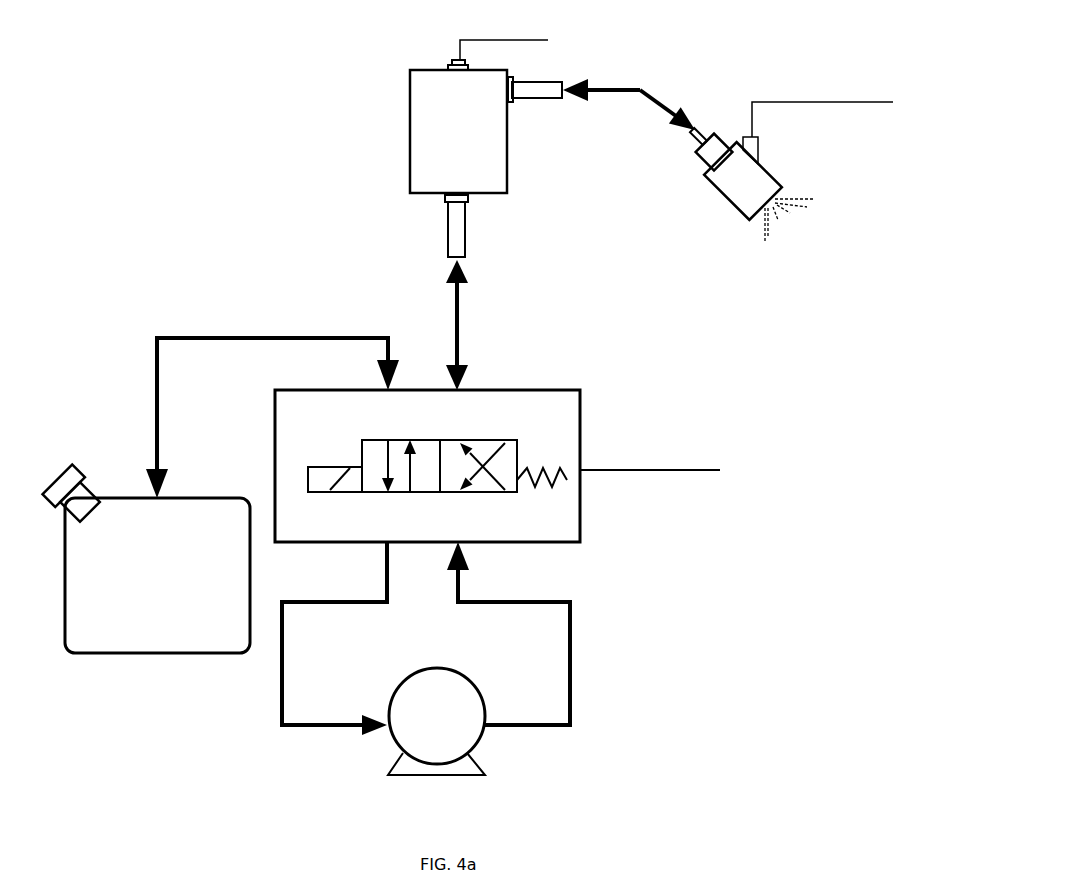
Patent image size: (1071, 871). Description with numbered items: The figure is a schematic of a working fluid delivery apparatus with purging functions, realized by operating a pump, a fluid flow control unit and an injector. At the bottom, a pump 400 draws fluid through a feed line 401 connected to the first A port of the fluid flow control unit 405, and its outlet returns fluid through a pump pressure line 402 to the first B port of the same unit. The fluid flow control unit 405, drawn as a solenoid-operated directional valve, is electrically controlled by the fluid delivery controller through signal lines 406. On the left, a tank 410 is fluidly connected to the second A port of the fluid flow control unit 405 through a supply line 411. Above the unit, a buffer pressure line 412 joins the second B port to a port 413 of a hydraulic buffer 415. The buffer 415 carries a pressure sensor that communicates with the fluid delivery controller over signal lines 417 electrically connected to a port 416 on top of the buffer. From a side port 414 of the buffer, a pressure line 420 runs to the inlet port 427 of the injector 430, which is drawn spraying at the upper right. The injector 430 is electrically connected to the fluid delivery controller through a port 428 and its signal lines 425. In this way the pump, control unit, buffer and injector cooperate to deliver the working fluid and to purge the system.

The pump 400 is at (435, 668).
The feed line 401 is at (280, 703).
The pump pressure line 402 is at (572, 638).
The fluid flow control unit 405 is at (580, 523).
The signal lines 406 is at (685, 470).
The tank 410 is at (193, 497).
The supply line 411 is at (237, 338).
The buffer pressure line 412 is at (455, 333).
The port 413 is at (468, 198).
The buffer inlet port 414 is at (512, 102).
The hydraulic buffer 415 is at (410, 127).
The port 416 is at (448, 63).
The signal lines 417 is at (502, 40).
The pressure line 420 is at (640, 83).
The control line 425 is at (837, 102).
The inlet port 427 is at (695, 143).
The port 428 is at (760, 137).
The injector 430 is at (781, 170).